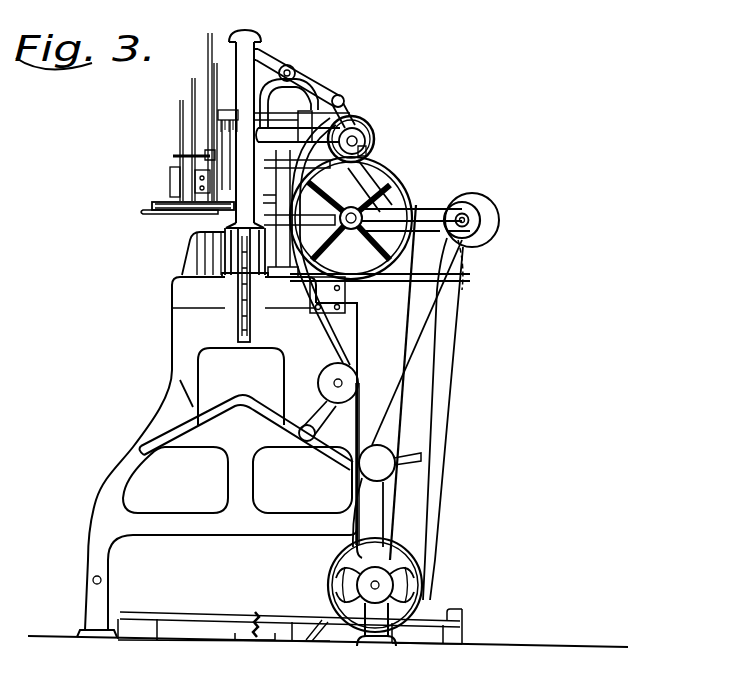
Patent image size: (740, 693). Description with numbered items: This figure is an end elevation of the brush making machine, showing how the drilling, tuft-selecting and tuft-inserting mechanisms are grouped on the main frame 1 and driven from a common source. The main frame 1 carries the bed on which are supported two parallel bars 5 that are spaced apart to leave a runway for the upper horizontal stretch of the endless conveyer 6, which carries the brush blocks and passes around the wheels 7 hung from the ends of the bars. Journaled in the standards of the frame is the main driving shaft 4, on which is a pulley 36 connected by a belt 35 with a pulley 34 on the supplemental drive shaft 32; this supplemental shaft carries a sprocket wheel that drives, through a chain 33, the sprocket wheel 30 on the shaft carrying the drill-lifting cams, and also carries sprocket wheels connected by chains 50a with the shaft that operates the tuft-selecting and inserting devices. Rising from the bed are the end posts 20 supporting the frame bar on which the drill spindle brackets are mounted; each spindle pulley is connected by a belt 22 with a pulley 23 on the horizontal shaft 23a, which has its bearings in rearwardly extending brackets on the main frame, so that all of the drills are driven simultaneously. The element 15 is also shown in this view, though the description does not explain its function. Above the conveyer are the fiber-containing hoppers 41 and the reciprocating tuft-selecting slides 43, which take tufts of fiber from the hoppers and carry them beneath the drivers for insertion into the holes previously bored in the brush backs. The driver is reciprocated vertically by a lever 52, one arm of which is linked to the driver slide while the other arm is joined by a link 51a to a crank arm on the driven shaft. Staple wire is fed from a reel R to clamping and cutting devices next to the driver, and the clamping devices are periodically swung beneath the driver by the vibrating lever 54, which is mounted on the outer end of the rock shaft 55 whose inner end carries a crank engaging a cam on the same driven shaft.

The main frame 1 is at (163, 395).
The main driving shaft 4 is at (372, 585).
The bars 5 is at (223, 238).
The conveyer 6 is at (243, 318).
The wheels 7 is at (240, 335).
The column standard 15 is at (262, 36).
The end posts 20 is at (373, 150).
The belt 22 is at (435, 192).
The pulley 23 is at (490, 211).
The horizontal shaft 23a is at (478, 244).
The sprocket wheel 30 is at (372, 120).
The supplemental drive shaft 32 is at (390, 195).
The chain 33 is at (372, 185).
The pulley 34 is at (366, 283).
The belt 35 is at (406, 348).
The pulley 36 is at (400, 630).
The fiber-containing hoppers 41 is at (183, 127).
The tuft-selecting slides 43 is at (183, 215).
The chains 50a is at (400, 135).
The link 51a is at (352, 112).
The lever 52 is at (310, 78).
The vibrating lever 54 is at (207, 143).
The rock shaft 55 is at (301, 152).
The wire reel R is at (475, 195).